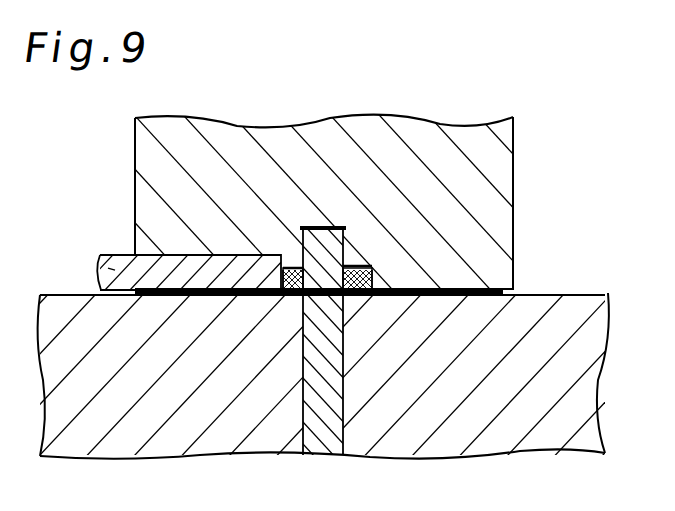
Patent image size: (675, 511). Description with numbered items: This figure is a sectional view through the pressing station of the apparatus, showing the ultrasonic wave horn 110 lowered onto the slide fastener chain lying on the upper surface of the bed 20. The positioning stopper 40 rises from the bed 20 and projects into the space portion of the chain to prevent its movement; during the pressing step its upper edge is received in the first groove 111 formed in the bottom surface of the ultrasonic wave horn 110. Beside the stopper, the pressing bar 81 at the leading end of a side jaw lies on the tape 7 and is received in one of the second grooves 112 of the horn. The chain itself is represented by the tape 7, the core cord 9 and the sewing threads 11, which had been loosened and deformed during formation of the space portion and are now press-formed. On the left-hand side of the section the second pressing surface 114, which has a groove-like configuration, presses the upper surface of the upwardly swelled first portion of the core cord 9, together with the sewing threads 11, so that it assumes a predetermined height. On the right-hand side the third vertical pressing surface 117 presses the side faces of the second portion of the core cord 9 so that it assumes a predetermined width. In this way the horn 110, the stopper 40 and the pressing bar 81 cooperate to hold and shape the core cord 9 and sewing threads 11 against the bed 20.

The tape 7 is at (222, 296).
The core cord 9 is at (282, 273).
The sewing thread 11 is at (286, 268).
The bed 20 is at (585, 358).
The positioning stopper 40 is at (329, 422).
The pressing bar 81 is at (110, 270).
The ultrasonic wave horn 110 is at (455, 137).
The first groove 111 is at (331, 227).
The second grooves 112 is at (157, 266).
The second pressing surface 114 is at (345, 265).
The third vertical pressing surface 117 is at (352, 268).